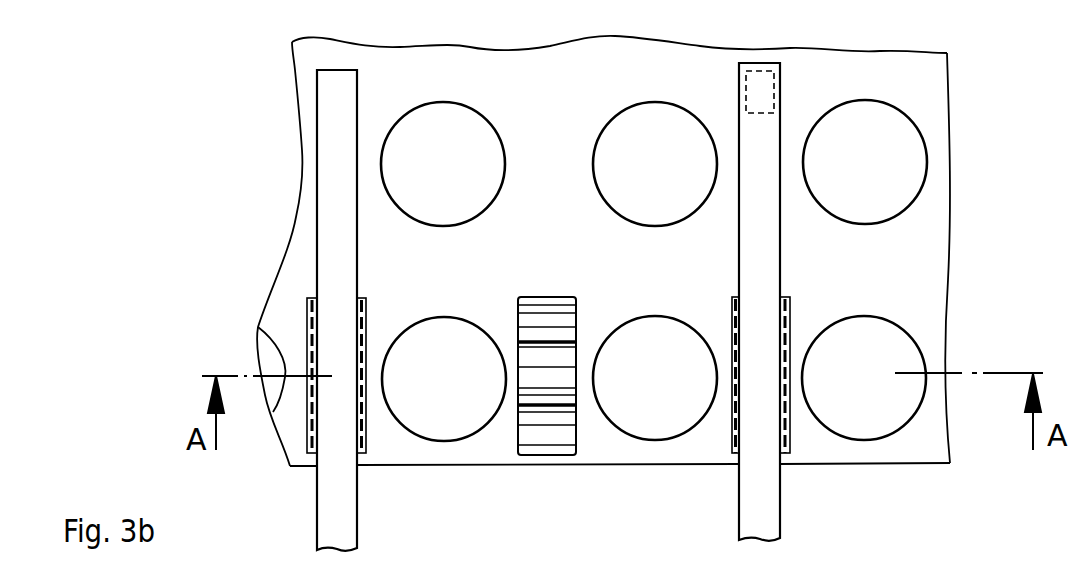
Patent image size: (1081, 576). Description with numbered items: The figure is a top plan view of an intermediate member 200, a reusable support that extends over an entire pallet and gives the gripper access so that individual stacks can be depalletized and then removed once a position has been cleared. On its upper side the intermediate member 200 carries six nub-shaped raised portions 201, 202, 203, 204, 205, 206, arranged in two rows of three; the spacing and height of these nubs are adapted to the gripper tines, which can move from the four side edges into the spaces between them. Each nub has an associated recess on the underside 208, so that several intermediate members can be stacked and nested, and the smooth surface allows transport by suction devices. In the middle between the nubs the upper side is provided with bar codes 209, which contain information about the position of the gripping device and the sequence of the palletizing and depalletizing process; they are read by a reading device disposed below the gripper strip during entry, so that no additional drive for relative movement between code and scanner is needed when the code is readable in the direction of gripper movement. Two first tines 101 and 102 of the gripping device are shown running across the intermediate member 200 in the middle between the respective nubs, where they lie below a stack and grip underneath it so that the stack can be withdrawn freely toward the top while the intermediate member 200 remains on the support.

The intermediate member 200 is at (935, 257).
The raised portion 201 is at (463, 127).
The raised portion 202 is at (667, 118).
The raised portion 203 is at (871, 124).
The raised portion 204 is at (455, 417).
The raised portion 205 is at (651, 405).
The raised portion 206 is at (862, 418).
The underside 208 is at (938, 0).
The bar code 209 is at (310, 443).
The first tine 101 is at (342, 528).
The first tine 102 is at (793, 525).